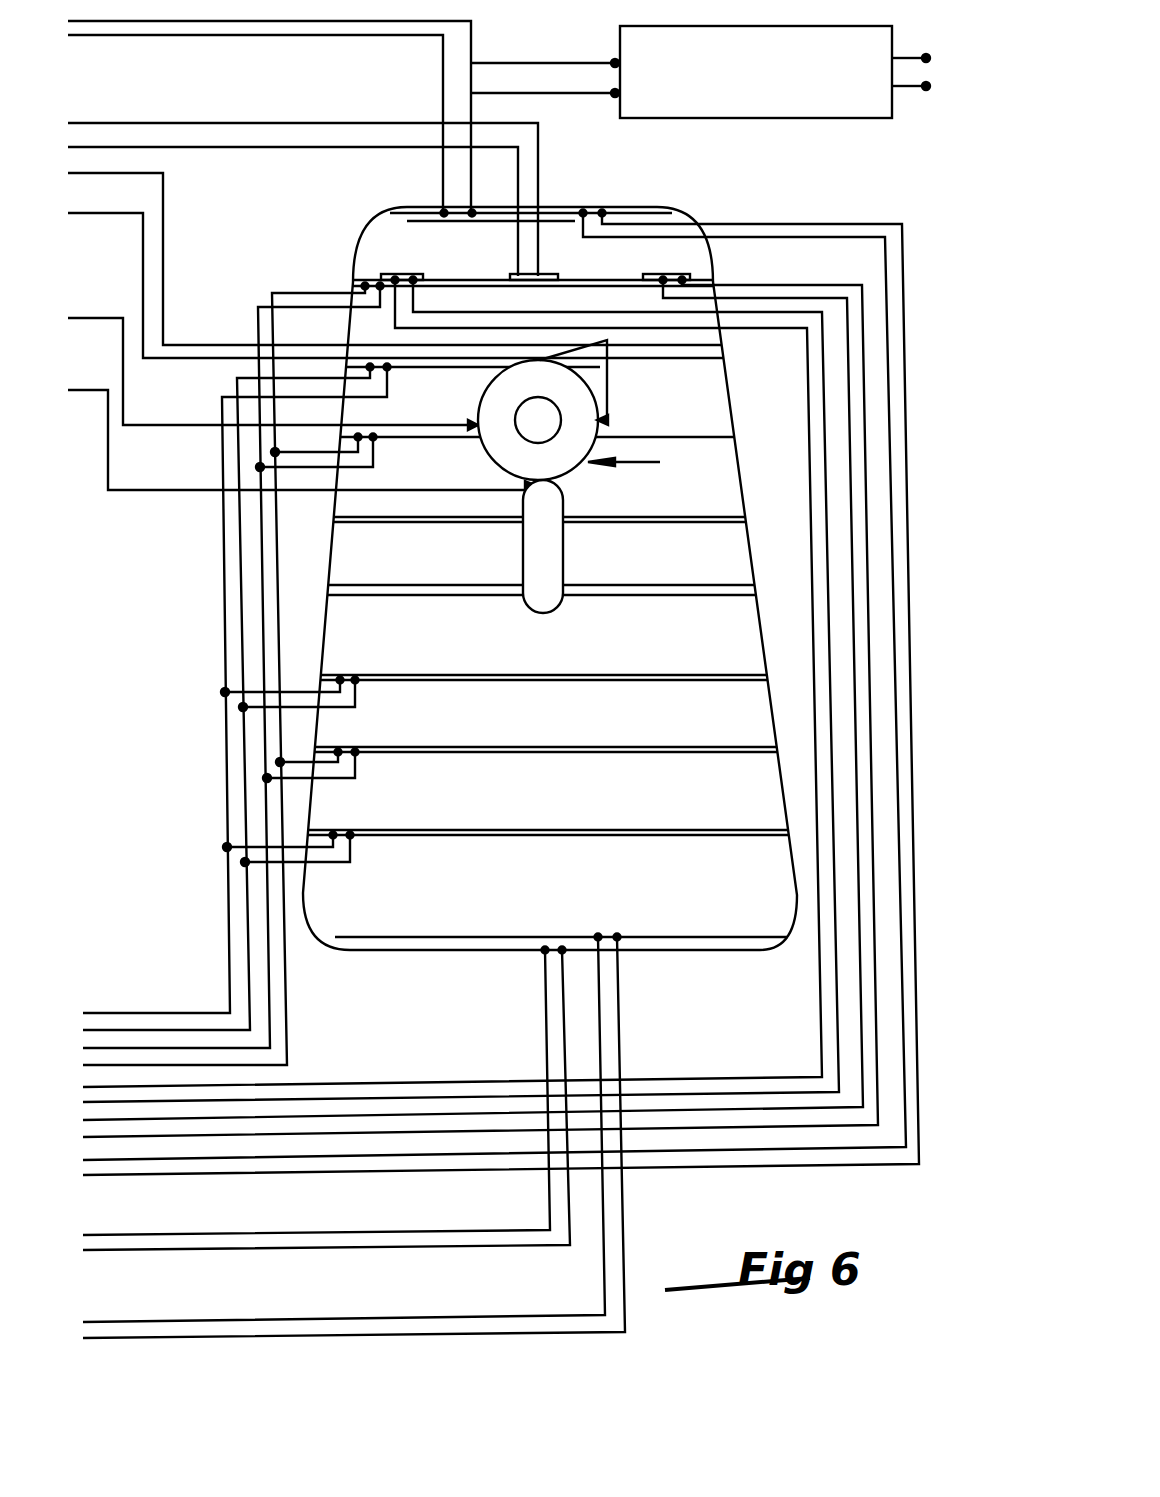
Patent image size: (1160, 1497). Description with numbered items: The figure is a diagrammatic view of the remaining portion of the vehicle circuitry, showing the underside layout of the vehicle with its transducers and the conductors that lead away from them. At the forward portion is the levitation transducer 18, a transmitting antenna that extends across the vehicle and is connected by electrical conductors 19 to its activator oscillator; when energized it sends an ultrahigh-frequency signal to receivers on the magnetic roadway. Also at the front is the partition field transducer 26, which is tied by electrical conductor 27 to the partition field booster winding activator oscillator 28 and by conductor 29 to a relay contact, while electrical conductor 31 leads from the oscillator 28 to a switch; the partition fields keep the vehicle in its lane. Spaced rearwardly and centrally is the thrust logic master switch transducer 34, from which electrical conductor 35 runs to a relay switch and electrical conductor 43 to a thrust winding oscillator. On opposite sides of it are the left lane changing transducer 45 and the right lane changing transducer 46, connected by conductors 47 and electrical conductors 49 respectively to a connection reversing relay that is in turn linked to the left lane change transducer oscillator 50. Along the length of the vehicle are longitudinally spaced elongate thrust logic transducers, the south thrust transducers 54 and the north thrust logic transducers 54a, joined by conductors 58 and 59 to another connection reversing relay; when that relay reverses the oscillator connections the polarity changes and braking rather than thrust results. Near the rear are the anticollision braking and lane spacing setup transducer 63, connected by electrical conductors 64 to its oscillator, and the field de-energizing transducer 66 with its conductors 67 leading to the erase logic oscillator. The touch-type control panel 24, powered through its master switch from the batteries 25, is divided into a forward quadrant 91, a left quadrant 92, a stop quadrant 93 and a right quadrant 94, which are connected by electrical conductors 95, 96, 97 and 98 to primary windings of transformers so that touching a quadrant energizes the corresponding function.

The levitation transducer 18 is at (602, 212).
The electrical conductors 19 is at (902, 240).
The control panel 24 is at (510, 405).
The batteries 25 is at (660, 462).
The partition field transducer 26 is at (445, 212).
The electrical conductor 27 is at (583, 94).
The partition field booster winding activator oscillator 28 is at (870, 118).
The conductor 29 is at (443, 47).
The electrical conductor 31 is at (475, 27).
The thrust logic master switch transducer 34 is at (513, 273).
The electrical conductor 35 is at (100, 122).
The electrical conductor 43 is at (203, 148).
The left lane changing transducer 45 is at (650, 273).
The right lane changing transducer 46 is at (398, 273).
The conductors 47 is at (840, 295).
The electrical conductors 49 is at (473, 328).
The left lane change transducer oscillator 50 is at (713, 357).
The south thrust transducers 54 is at (493, 288).
The north thrust logic transducers 54a is at (698, 596).
The conductors 58 is at (288, 1045).
The conductors 59 is at (135, 1013).
The anticollision braking and lane spacing setup transducer 63 is at (478, 935).
The electrical conductors 64 is at (133, 1322).
The field de-energizing transducer 66 is at (490, 945).
The bottom winding tap leads 67 is at (133, 1235).
The forward quadrant 91 is at (607, 345).
The left quadrant 92 is at (495, 445).
The stop quadrant 93 is at (565, 468).
The right quadrant 94 is at (600, 422).
The electrical conductor 95 is at (108, 214).
The electrical conductor 96 is at (97, 318).
The electrical conductor 97 is at (93, 390).
The electrical conductor 98 is at (123, 174).